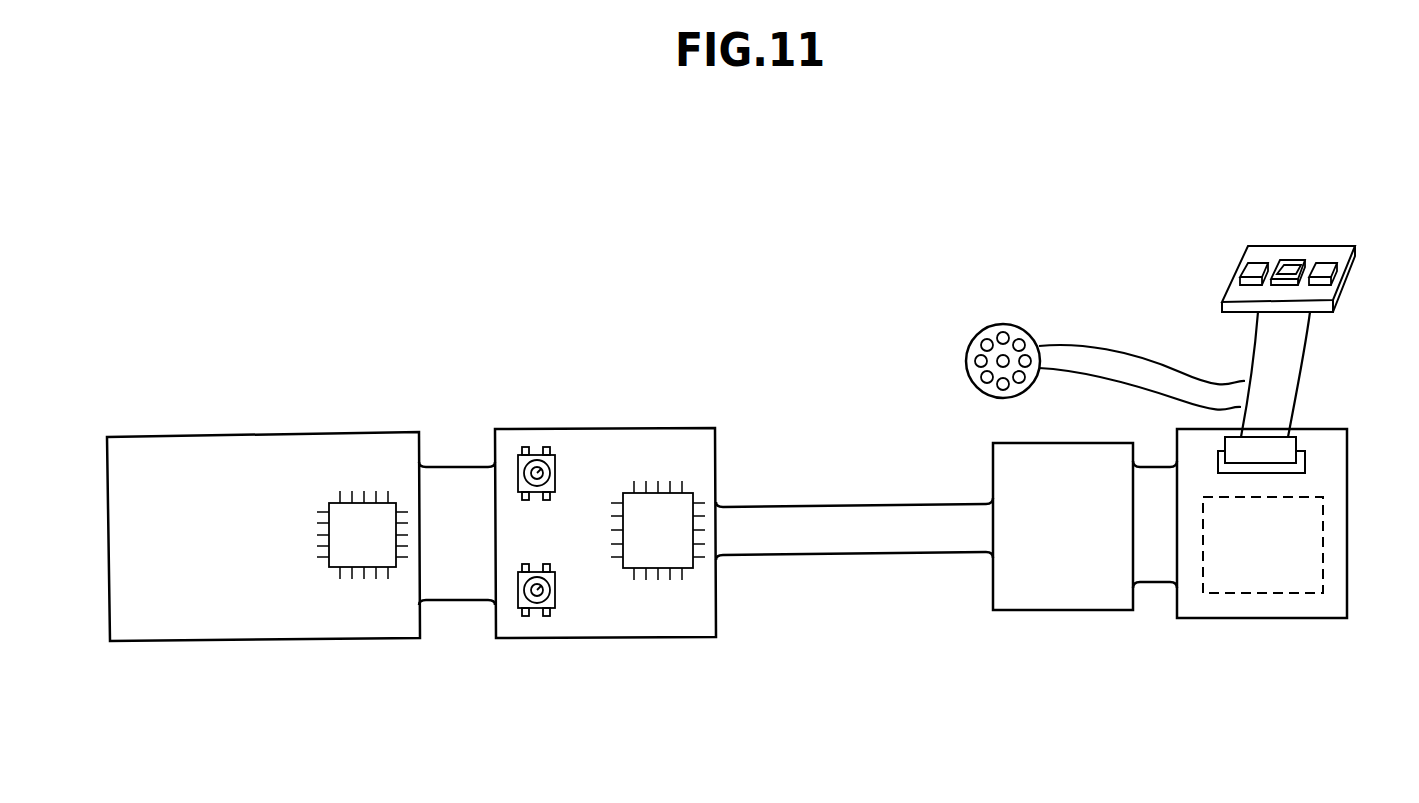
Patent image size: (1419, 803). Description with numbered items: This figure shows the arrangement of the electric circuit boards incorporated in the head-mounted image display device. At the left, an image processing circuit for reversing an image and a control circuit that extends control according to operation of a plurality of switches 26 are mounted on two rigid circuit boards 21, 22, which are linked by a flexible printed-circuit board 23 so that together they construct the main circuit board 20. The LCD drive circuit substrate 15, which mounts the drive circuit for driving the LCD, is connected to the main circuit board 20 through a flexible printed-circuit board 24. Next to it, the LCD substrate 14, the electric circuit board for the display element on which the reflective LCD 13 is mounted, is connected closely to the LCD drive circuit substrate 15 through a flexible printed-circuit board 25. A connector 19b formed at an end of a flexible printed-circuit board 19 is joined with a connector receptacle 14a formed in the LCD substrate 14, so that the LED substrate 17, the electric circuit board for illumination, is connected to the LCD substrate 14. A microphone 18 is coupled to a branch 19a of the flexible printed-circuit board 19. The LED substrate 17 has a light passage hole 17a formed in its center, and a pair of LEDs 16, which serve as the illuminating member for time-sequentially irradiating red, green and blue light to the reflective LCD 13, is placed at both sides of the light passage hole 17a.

The reflective LCD 13 is at (1288, 593).
The LCD substrate 14 is at (1245, 618).
The connector receptacle 14a is at (1305, 466).
The LCD drive circuit substrate 15 is at (1056, 593).
The LEDs 16 is at (1250, 268).
The LED substrate 17 is at (1322, 292).
The light passage hole 17a is at (1290, 265).
The microphone 18 is at (1003, 325).
The flexible printed-circuit board 19 is at (1280, 382).
The branch 19a is at (1102, 360).
The connector 19b is at (1290, 450).
The main circuit board 20 is at (643, 330).
The rigid circuit board 21 is at (628, 440).
The rigid circuit board 22 is at (363, 447).
The flexible printed-circuit board 23 is at (460, 488).
The flexible printed-circuit board 24 is at (856, 520).
The flexible printed-circuit board 25 is at (1154, 567).
The switches 26 is at (537, 590).